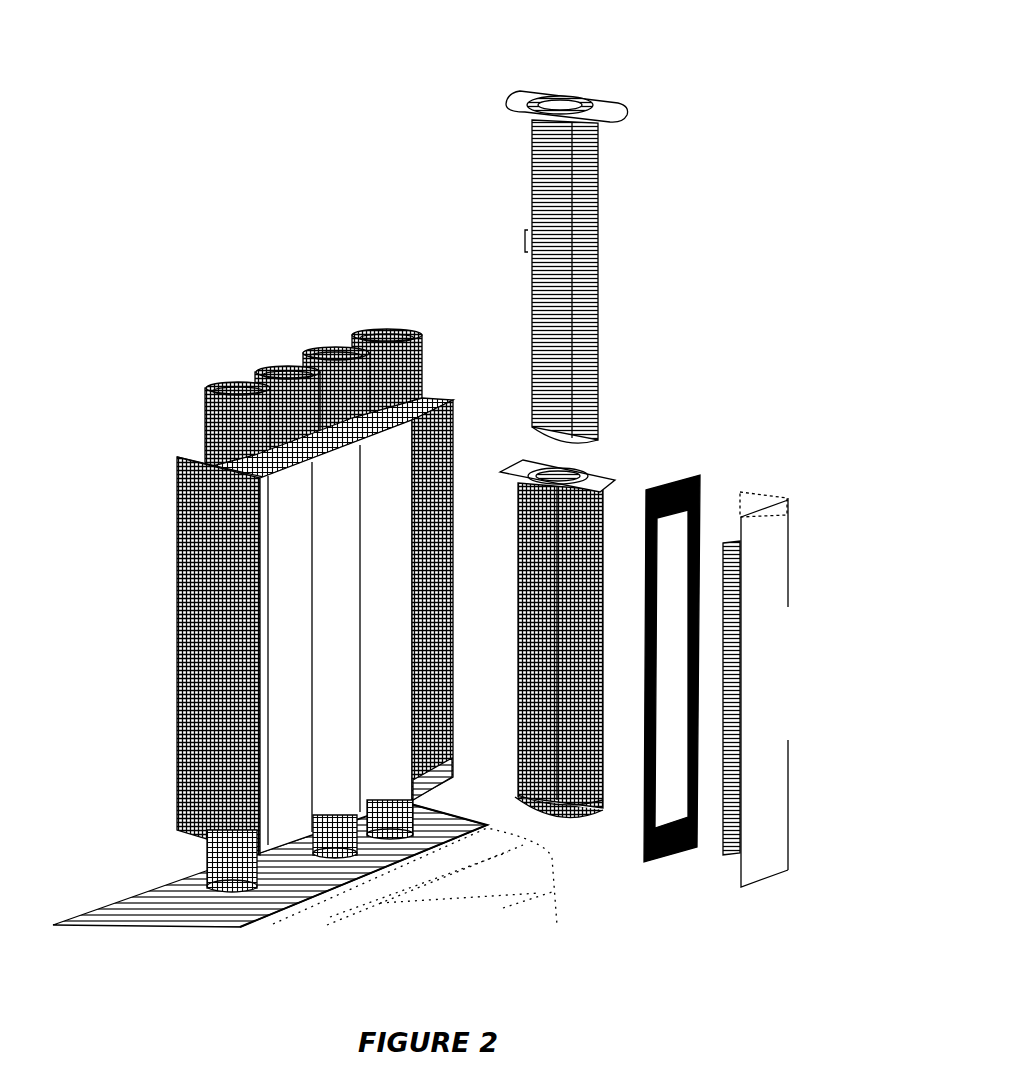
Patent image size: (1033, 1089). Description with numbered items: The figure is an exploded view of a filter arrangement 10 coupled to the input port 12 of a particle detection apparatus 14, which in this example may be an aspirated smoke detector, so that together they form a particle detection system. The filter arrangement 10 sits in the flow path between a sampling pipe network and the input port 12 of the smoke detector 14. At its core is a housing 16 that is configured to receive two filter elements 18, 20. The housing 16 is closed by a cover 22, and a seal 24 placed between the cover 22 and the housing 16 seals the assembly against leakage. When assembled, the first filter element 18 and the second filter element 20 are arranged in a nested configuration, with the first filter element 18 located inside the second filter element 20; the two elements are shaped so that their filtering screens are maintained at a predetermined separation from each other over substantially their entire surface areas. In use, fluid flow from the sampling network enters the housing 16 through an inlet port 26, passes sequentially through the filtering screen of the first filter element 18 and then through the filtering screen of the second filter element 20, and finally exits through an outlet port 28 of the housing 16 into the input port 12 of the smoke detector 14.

The filter arrangement 10 is at (293, 155).
The input port 12 is at (400, 847).
The particle detection apparatus 14 is at (303, 917).
The housing 16 is at (453, 495).
The first filter element 18 is at (600, 120).
The second filter element 20 is at (612, 473).
The cover 22 is at (776, 571).
The seal 24 is at (700, 482).
The inlet port 26 is at (381, 298).
The outlet port 28 is at (455, 735).